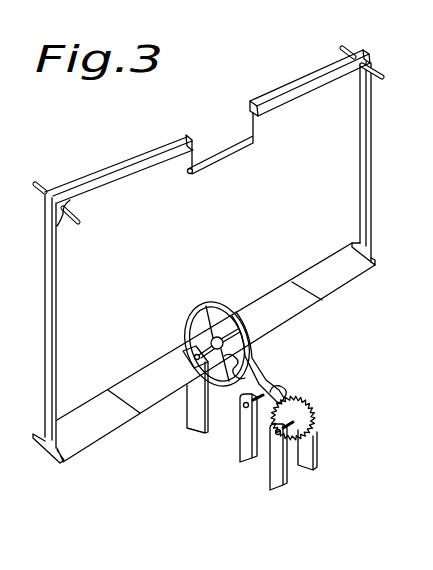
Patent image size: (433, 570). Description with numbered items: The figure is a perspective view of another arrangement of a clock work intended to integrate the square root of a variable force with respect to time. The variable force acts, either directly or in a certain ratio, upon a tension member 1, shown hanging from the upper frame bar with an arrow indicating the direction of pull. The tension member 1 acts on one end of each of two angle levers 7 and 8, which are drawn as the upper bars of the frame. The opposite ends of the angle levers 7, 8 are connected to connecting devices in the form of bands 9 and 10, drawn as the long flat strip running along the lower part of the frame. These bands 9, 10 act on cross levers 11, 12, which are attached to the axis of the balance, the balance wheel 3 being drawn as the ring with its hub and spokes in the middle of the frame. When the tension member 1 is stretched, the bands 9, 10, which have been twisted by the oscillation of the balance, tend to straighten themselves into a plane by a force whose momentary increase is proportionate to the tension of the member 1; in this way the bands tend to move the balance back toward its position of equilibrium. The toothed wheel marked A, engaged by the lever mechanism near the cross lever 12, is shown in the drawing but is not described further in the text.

The tension member 1 is at (223, 158).
The wheel 3 is at (205, 303).
The angle lever 7 is at (102, 173).
The angle lever 8 is at (308, 80).
The band 9 is at (105, 428).
The band 10 is at (303, 273).
The cross lever 11 is at (186, 346).
The cross lever 12 is at (245, 301).
The star wheel A is at (300, 402).